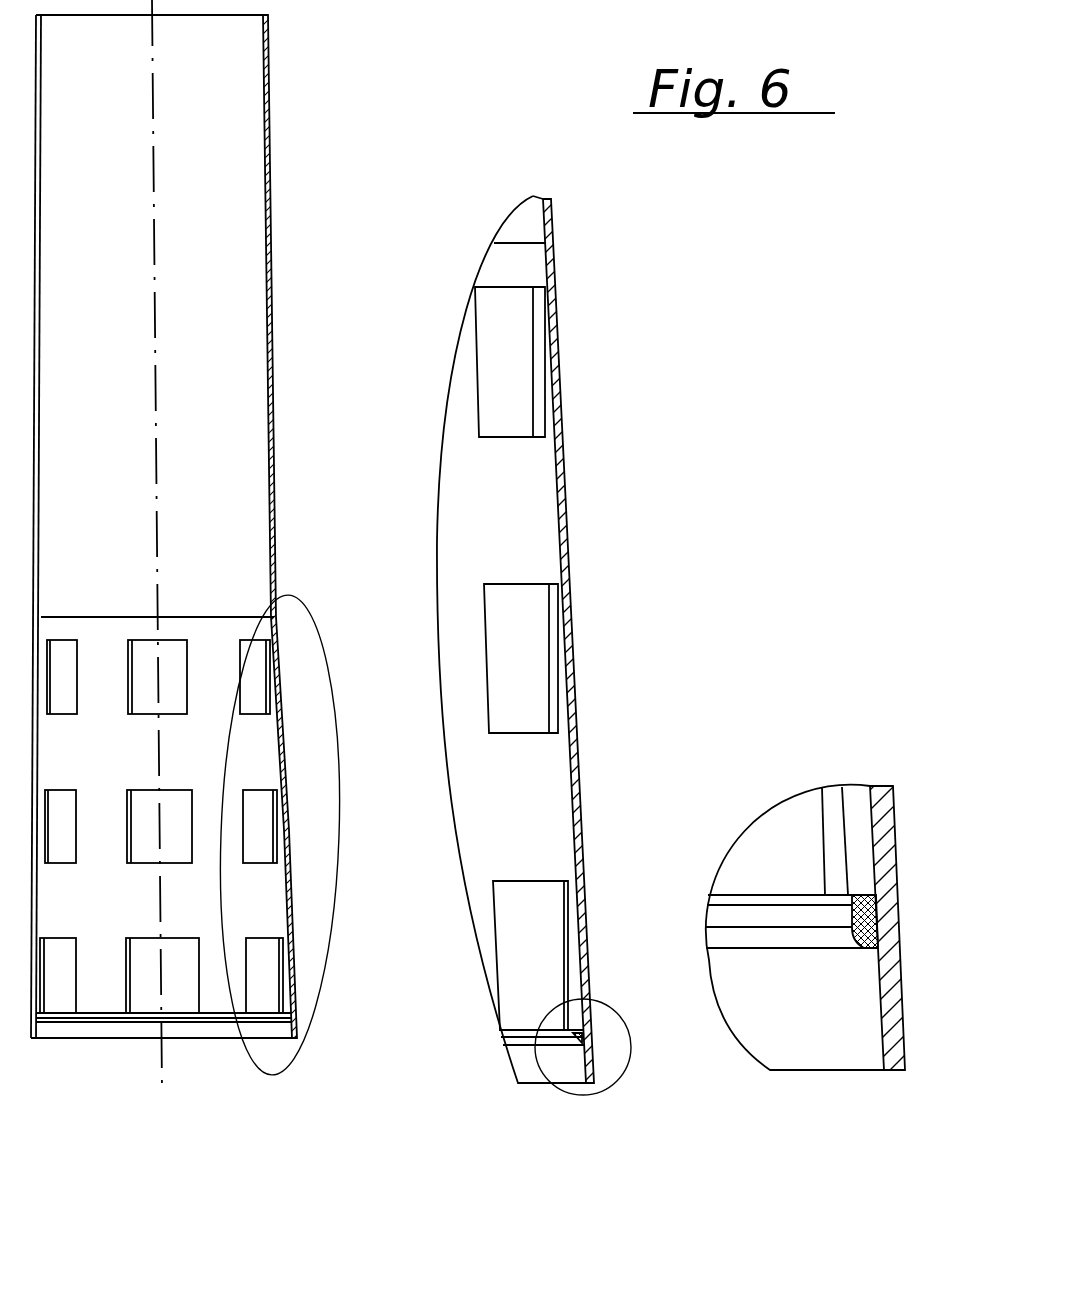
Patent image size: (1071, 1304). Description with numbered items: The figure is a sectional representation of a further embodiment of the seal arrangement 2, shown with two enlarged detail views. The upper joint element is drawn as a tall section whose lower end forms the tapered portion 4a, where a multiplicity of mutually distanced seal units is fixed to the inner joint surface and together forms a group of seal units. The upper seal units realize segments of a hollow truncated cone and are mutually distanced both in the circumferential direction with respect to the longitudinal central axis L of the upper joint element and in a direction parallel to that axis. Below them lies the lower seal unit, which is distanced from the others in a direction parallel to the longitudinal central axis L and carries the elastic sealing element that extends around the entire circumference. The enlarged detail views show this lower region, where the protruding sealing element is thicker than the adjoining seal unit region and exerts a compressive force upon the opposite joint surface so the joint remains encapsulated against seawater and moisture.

The seal arrangement 2 is at (303, 558).
The tapered portion 4a is at (280, 619).
The longitudinal central axis L is at (157, 144).